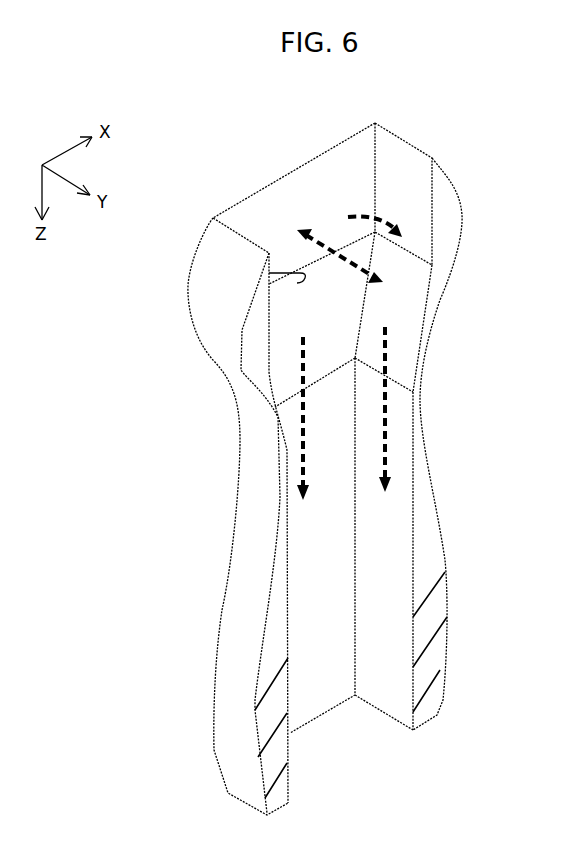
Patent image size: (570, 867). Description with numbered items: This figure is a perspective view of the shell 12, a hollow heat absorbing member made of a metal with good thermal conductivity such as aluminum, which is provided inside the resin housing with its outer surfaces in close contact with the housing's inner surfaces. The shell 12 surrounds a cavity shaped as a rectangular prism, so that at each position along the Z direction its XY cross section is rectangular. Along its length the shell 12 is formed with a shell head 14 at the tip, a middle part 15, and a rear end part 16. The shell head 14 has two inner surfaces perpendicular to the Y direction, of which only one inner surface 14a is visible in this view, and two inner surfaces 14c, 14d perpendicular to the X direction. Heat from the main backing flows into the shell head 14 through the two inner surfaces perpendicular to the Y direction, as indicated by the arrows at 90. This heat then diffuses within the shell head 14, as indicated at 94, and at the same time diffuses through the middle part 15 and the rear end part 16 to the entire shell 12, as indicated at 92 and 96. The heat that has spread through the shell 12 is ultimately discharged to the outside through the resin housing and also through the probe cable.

The shell 12 is at (265, 140).
The shell head 14 is at (460, 222).
The inner surface 14a is at (262, 218).
The inner surface 14c is at (407, 190).
The inner surface 14d is at (304, 279).
The middle part 15 is at (422, 398).
The rear end part 16 is at (447, 600).
The heat inflow 90 is at (325, 237).
The heat diffusion 92 is at (305, 410).
The heat diffusion 94 is at (380, 216).
The heat diffusion 96 is at (390, 432).